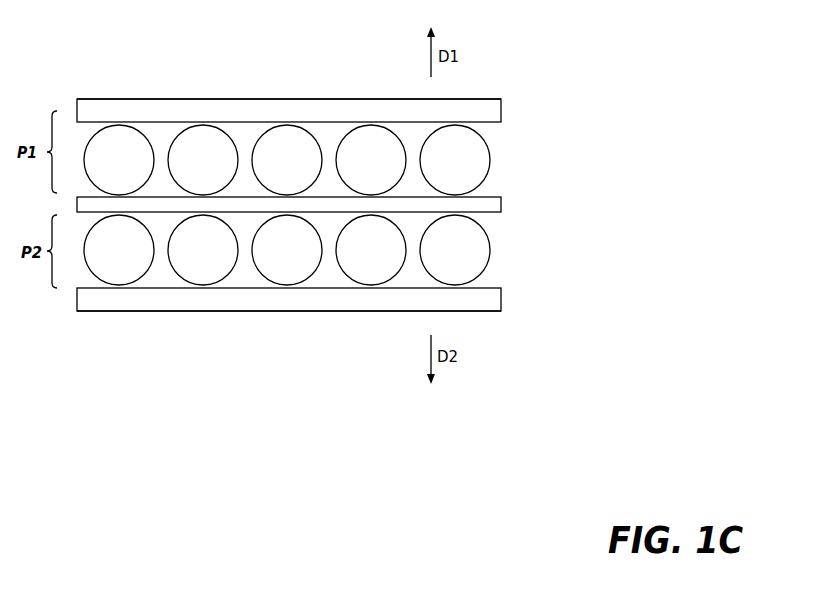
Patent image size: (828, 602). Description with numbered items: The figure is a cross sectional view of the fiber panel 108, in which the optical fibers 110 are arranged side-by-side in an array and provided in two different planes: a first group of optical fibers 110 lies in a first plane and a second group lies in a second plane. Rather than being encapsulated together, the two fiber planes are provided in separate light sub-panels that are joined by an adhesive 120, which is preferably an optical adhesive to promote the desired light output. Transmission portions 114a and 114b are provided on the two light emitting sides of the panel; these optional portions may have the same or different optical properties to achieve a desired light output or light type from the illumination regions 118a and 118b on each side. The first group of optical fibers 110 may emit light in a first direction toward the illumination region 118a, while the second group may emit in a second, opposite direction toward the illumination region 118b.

The fiber panel 108 is at (112, 70).
The transmission portion 114a is at (482, 99).
The transmission portion 114b is at (501, 311).
The illumination region 118a is at (293, 74).
The illumination region 118b is at (339, 350).
The optical fibers 110 is at (490, 166).
The adhesive 120 is at (501, 212).